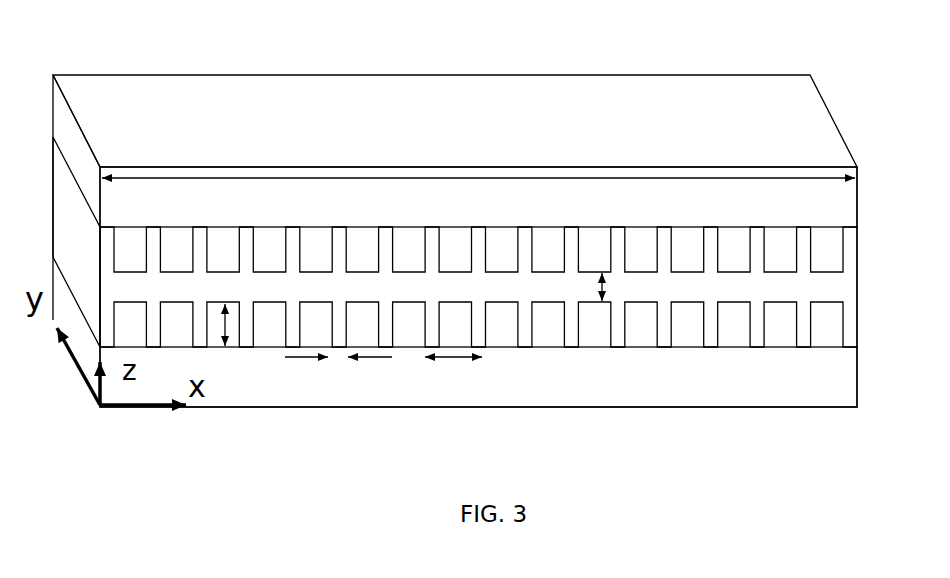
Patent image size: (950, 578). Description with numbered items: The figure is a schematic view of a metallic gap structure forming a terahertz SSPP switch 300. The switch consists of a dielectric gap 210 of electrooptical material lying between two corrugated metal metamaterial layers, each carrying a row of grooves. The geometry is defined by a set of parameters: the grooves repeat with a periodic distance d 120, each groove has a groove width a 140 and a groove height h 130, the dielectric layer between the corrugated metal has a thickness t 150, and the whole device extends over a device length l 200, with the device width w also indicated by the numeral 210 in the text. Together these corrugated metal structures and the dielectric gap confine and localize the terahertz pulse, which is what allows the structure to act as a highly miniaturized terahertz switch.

The terahertz SSPP switch 300 is at (508, 137).
The device length l 200 is at (510, 178).
The dielectric gap 210 is at (55, 104).
The thickness t 150 is at (610, 280).
The groove height h 130 is at (228, 327).
The groove width a 140 is at (305, 358).
The periodic distance d 120 is at (447, 357).